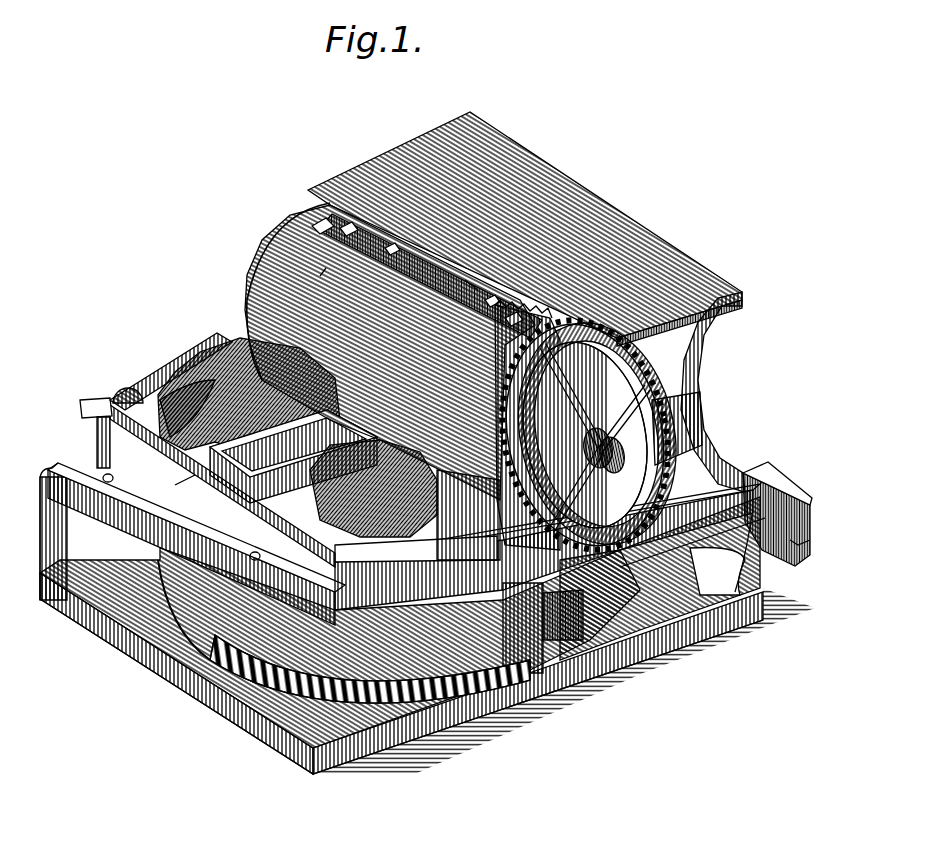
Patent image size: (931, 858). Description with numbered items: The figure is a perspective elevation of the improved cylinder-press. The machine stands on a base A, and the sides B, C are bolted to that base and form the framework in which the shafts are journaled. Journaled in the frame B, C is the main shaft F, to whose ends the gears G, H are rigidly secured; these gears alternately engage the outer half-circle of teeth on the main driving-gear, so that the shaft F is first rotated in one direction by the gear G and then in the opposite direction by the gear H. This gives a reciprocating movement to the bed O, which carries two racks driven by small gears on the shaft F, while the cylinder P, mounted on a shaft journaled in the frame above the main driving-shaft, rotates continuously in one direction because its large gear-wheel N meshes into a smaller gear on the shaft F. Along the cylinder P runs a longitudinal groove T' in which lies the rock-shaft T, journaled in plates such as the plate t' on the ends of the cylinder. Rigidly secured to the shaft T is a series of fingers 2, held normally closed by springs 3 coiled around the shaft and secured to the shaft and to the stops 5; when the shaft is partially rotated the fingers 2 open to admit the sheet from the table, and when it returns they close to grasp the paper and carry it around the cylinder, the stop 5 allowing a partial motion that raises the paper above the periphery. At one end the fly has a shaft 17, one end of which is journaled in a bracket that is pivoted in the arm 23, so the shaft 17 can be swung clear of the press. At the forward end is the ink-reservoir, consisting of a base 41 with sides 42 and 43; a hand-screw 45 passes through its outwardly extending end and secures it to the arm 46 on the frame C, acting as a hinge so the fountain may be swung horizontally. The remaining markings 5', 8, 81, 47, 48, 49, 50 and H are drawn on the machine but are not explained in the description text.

The base A is at (401, 661).
The side B is at (43, 505).
The side C is at (306, 745).
The cylinder P is at (262, 283).
The gear-wheel N is at (645, 352).
The rock-shaft T is at (430, 276).
The longitudinal groove T' is at (469, 273).
The plate t' is at (304, 219).
The finger 2 is at (348, 226).
The spring 3 is at (392, 246).
The stop 5 is at (319, 281).
The stop 5' is at (176, 489).
The bar 8 is at (150, 430).
The bar end block 81 is at (95, 433).
The shaft 17 is at (777, 514).
The arm 23 is at (795, 540).
The base 41 is at (387, 652).
The side 42 is at (464, 655).
The side 43 is at (196, 382).
The hand-screw 45 is at (150, 385).
The arm 46 is at (434, 637).
The rail 47 is at (399, 555).
The gear stack 48 is at (243, 340).
The gear 49 is at (196, 365).
The box frame 50 is at (293, 474).
The gear H is at (212, 523).
The bed O is at (178, 512).
The main shaft F is at (370, 664).
The gear G is at (564, 635).